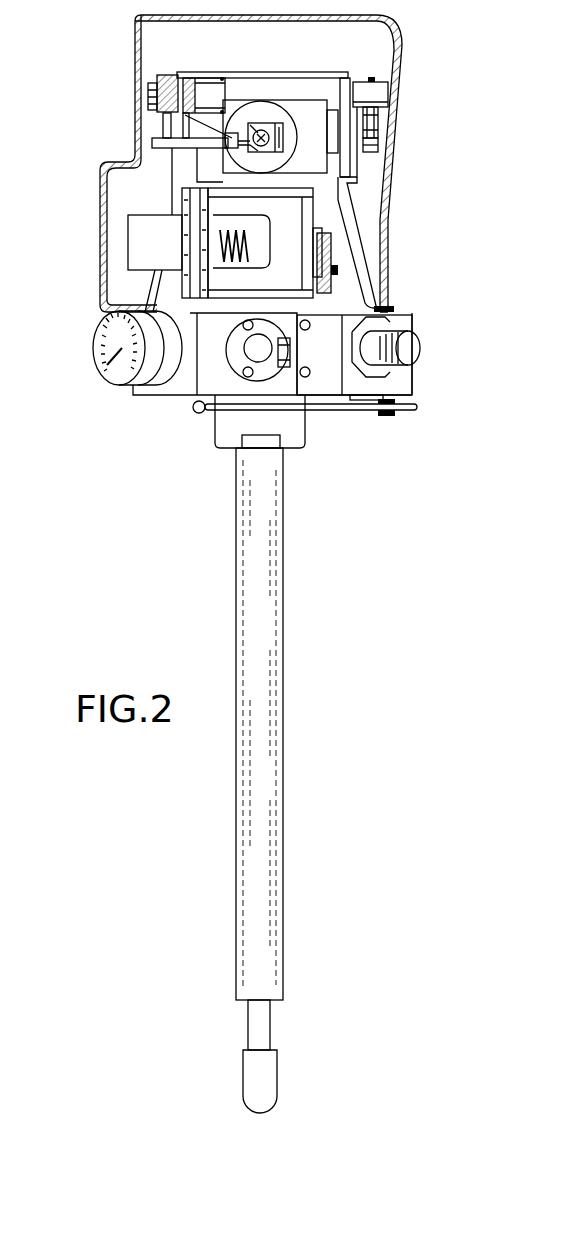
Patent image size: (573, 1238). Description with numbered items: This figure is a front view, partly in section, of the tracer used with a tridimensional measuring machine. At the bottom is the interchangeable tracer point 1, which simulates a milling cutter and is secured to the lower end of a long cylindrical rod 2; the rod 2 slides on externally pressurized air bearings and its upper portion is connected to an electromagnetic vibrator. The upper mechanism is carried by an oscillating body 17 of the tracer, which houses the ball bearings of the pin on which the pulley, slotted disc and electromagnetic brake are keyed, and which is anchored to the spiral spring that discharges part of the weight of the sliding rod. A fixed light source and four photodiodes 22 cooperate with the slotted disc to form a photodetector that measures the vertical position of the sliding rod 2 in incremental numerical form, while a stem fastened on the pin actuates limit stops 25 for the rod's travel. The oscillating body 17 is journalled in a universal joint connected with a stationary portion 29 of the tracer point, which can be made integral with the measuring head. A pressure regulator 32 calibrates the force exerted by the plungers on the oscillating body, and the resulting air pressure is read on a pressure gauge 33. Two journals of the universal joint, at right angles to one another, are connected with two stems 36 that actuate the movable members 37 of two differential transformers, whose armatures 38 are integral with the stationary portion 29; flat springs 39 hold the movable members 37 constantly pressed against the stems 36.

The tracer point 1 is at (258, 1077).
The cylindrical rod 2 is at (253, 1027).
The oscillating body 17 is at (247, 903).
The photodiodes 22 is at (217, 242).
The limit stops 25 is at (325, 246).
The stationary portion 29 is at (384, 240).
The pressure regulator 32 is at (418, 349).
The pressure gauge 33 is at (108, 373).
The stems 36 is at (155, 140).
The movable members 37 is at (150, 94).
The armatures 38 is at (186, 86).
The flat springs 39 is at (158, 80).